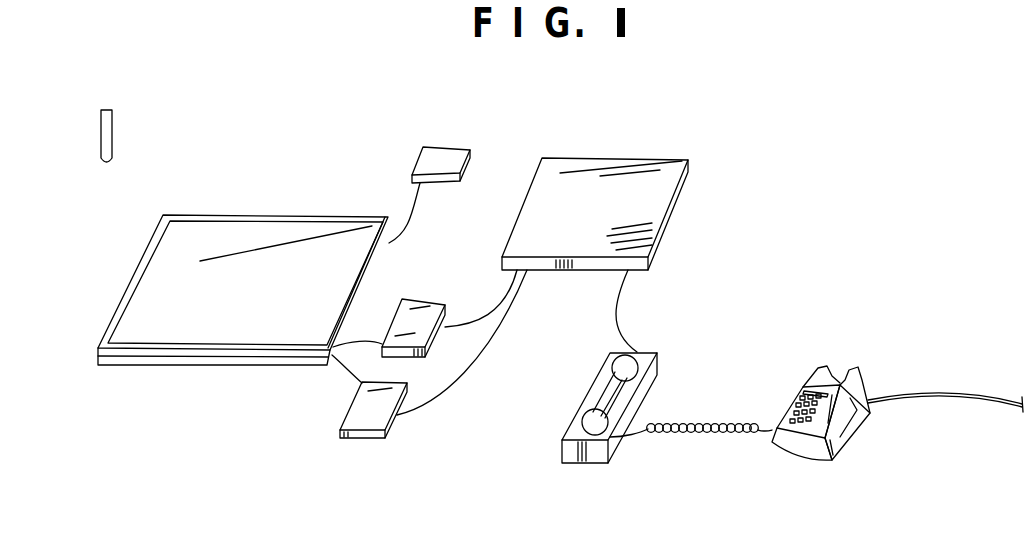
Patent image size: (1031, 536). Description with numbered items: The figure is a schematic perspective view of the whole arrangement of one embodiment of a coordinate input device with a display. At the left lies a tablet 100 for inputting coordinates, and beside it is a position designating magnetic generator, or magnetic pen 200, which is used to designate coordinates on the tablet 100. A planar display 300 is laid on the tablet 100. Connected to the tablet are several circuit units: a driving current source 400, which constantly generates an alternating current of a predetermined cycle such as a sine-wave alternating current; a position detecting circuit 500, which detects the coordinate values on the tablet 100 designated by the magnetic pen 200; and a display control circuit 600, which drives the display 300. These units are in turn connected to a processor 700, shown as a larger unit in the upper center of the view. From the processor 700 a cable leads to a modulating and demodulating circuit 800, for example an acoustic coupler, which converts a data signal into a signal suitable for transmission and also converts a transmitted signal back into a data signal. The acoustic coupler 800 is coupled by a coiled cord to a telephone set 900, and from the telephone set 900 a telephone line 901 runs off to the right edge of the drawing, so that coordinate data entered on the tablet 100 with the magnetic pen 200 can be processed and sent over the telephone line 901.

The tablet 100 is at (185, 366).
The position designating magnetic generator 200 is at (113, 140).
The planar display 300 is at (140, 293).
The driving current source 400 is at (450, 153).
The position detecting circuit 500 is at (372, 440).
The display control circuit 600 is at (430, 300).
The processor 700 is at (658, 160).
The modulating and demodulating circuit 800 is at (572, 428).
The telephone set 900 is at (800, 462).
The telephone line 901 is at (953, 394).